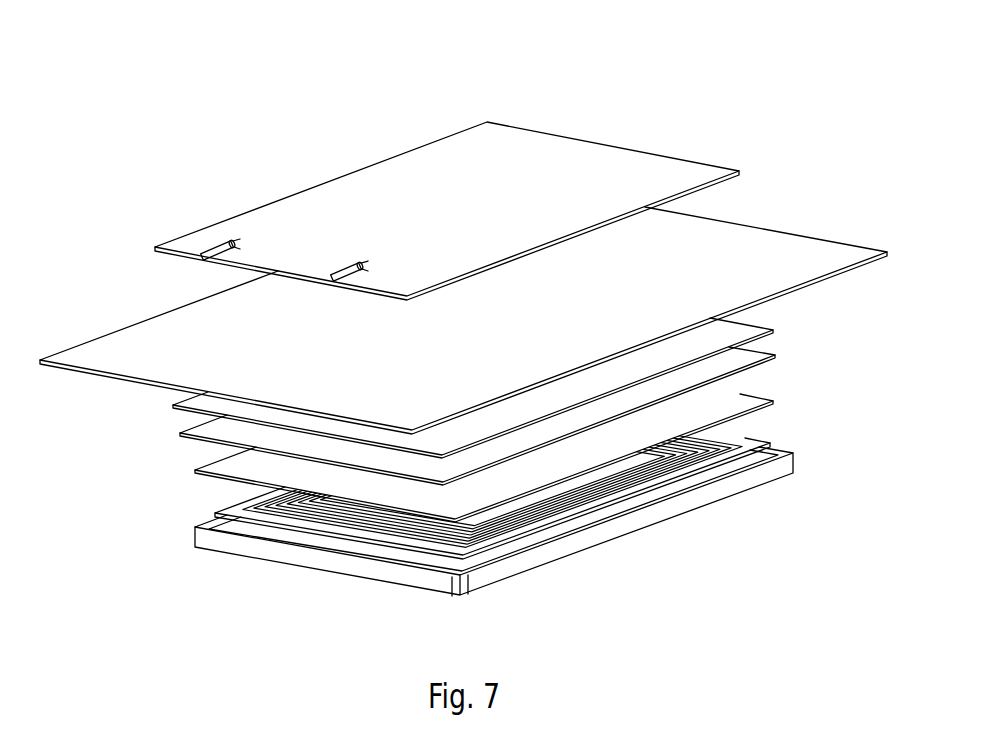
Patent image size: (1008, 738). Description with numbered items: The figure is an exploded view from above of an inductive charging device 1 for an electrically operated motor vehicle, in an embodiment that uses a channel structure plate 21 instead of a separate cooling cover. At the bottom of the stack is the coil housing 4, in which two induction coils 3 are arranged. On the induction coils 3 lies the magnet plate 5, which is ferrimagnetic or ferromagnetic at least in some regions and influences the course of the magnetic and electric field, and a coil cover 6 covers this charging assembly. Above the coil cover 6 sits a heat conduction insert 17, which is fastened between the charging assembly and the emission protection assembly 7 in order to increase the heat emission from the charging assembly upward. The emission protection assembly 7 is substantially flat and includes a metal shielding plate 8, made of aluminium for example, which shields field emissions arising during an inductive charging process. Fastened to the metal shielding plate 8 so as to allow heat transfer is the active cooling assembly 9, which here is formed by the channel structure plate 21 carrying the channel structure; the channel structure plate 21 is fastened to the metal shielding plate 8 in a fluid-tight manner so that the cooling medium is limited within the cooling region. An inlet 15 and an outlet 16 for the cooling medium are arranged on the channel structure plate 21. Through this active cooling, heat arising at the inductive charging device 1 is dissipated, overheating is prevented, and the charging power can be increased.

The inductive charging device 1 is at (160, 130).
The channel structure plate 21 is at (289, 219).
The active cooling assembly 9 is at (598, 165).
The inlet 15 is at (208, 262).
The outlet 16 is at (340, 282).
The emission protection assembly 7 is at (757, 205).
The metal shielding plate 8 is at (822, 257).
The heat conduction insert 17 is at (753, 330).
The coil cover 6 is at (745, 357).
The magnet plate 5 is at (743, 403).
The induction coils 3 is at (750, 439).
The coil housing 4 is at (765, 473).